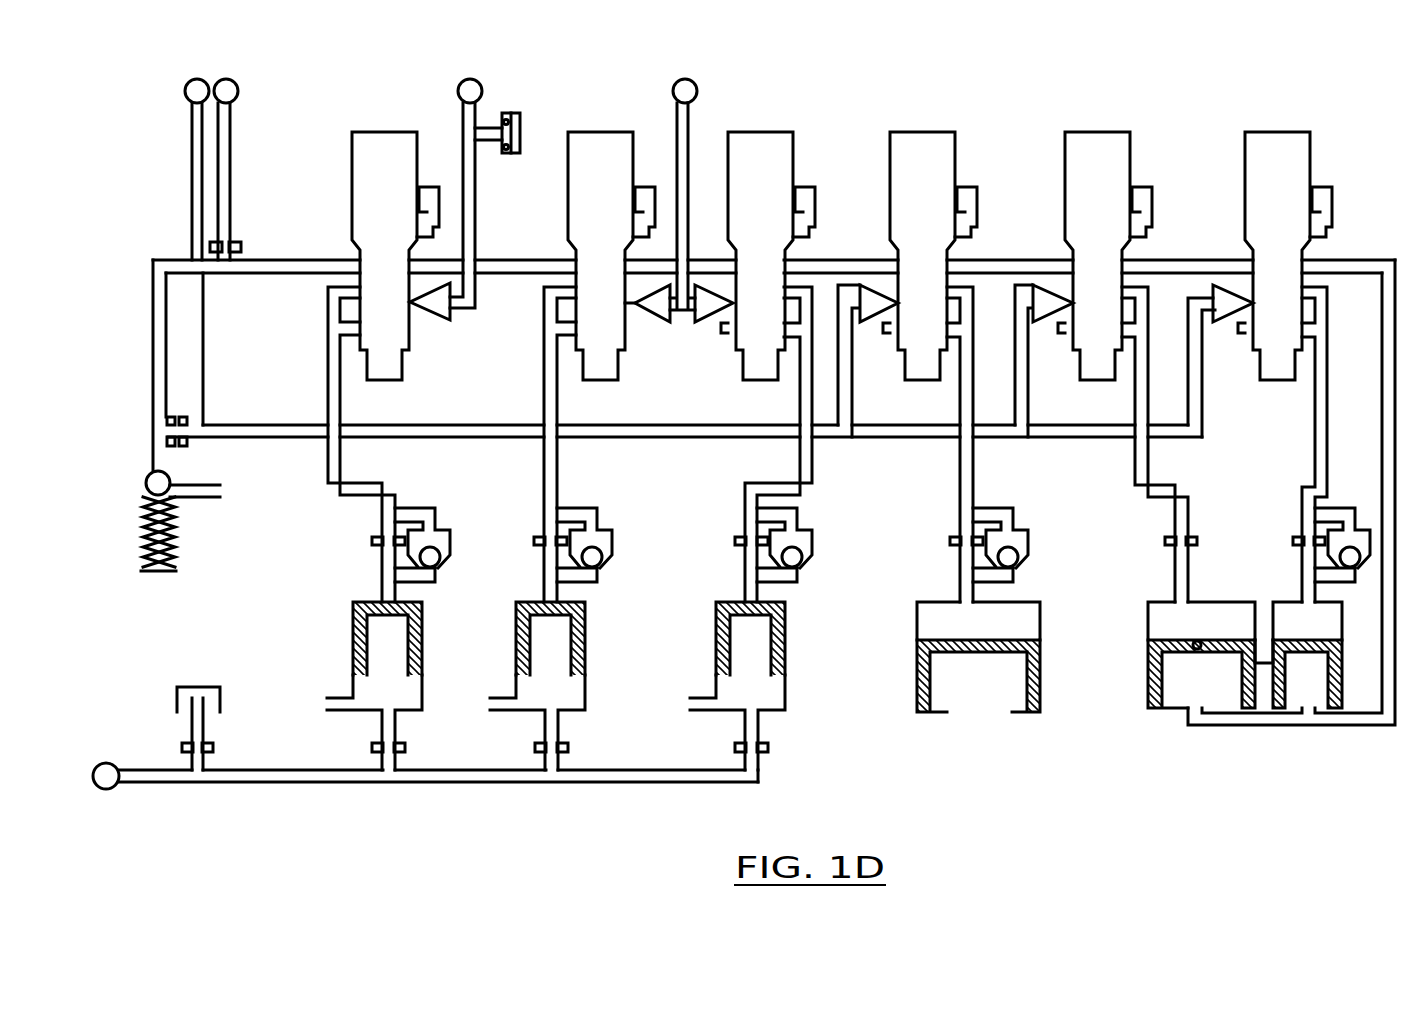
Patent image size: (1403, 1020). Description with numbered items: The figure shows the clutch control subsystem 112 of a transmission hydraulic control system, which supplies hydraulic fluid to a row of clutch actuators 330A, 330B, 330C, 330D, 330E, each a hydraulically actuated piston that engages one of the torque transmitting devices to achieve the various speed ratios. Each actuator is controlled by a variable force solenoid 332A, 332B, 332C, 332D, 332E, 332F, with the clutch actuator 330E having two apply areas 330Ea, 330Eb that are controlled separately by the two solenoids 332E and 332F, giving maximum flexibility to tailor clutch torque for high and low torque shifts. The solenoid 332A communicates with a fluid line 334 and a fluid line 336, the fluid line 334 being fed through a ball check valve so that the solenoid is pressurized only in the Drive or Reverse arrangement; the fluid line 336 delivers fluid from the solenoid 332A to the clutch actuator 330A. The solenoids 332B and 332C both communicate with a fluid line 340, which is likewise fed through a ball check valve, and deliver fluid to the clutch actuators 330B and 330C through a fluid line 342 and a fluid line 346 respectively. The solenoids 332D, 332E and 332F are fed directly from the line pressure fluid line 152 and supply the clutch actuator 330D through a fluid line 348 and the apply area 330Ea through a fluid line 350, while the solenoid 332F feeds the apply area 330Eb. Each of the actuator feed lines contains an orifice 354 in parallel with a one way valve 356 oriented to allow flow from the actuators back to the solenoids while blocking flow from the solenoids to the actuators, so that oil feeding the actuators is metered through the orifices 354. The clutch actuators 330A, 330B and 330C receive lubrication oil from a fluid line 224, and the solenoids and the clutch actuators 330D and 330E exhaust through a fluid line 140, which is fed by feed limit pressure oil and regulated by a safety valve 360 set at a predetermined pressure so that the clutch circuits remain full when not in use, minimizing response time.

The clutch control subsystem 112 is at (1027, 86).
The fluid line 152 is at (185, 170).
The fluid line 140 is at (233, 200).
The fluid line 334 is at (478, 222).
The fluid line 340 is at (690, 118).
The variable force solenoid 332A is at (412, 181).
The variable force solenoid 332B is at (626, 193).
The variable force solenoid 332C is at (787, 178).
The variable force solenoid 332D is at (950, 172).
The variable force solenoid 332E is at (1122, 181).
The variable force solenoid 332F is at (1303, 177).
The fluid line 336 is at (328, 375).
The fluid line 342 is at (544, 378).
The fluid line 346 is at (815, 452).
The fluid line 348 is at (976, 452).
The fluid line 350 is at (1150, 452).
The orifice 354 is at (372, 541).
The one way valve 356 is at (440, 527).
The safety valve 360 is at (175, 548).
The clutch actuator 330A is at (422, 620).
The clutch actuator 330B is at (585, 620).
The clutch actuator 330C is at (785, 620).
The clutch actuator 330D is at (1040, 622).
The clutch actuator 330E is at (1205, 631).
The apply area 330Ea is at (1215, 640).
The apply area 330Eb is at (1295, 645).
The fluid line 224 is at (155, 790).